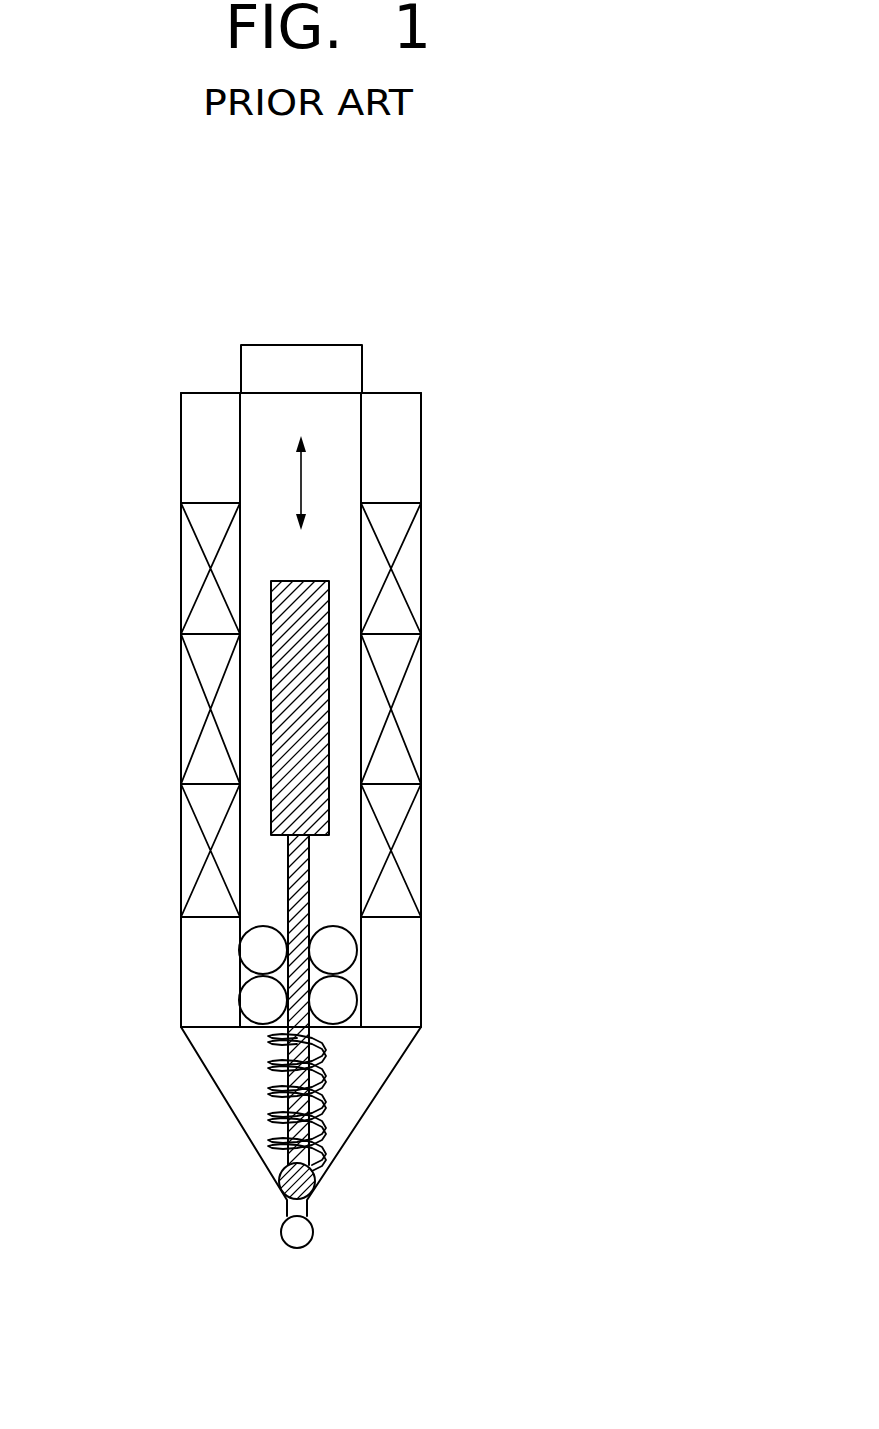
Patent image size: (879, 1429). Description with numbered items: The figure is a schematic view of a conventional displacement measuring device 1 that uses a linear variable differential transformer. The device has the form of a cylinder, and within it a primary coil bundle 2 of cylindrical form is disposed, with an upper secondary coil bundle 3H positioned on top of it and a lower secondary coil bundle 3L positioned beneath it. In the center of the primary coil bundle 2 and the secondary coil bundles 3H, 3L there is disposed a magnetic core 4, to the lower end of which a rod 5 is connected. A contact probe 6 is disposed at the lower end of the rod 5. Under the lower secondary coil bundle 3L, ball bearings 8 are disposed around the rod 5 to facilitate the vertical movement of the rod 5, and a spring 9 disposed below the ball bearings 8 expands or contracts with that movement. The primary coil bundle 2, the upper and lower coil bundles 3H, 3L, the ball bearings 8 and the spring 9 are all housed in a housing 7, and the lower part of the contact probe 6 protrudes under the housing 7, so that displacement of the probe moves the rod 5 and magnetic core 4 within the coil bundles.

The displacement measuring device 1 is at (522, 494).
The primary coil bundle 2 is at (415, 737).
The upper secondary coil bundle 3H is at (412, 568).
The lower secondary coil bundle 3L is at (193, 853).
The magnetic core 4 is at (329, 683).
The rod 5 is at (310, 875).
The contact probe 6 is at (312, 1243).
The housing 7 is at (421, 450).
The ball bearings 8 is at (263, 963).
The spring 9 is at (270, 1105).